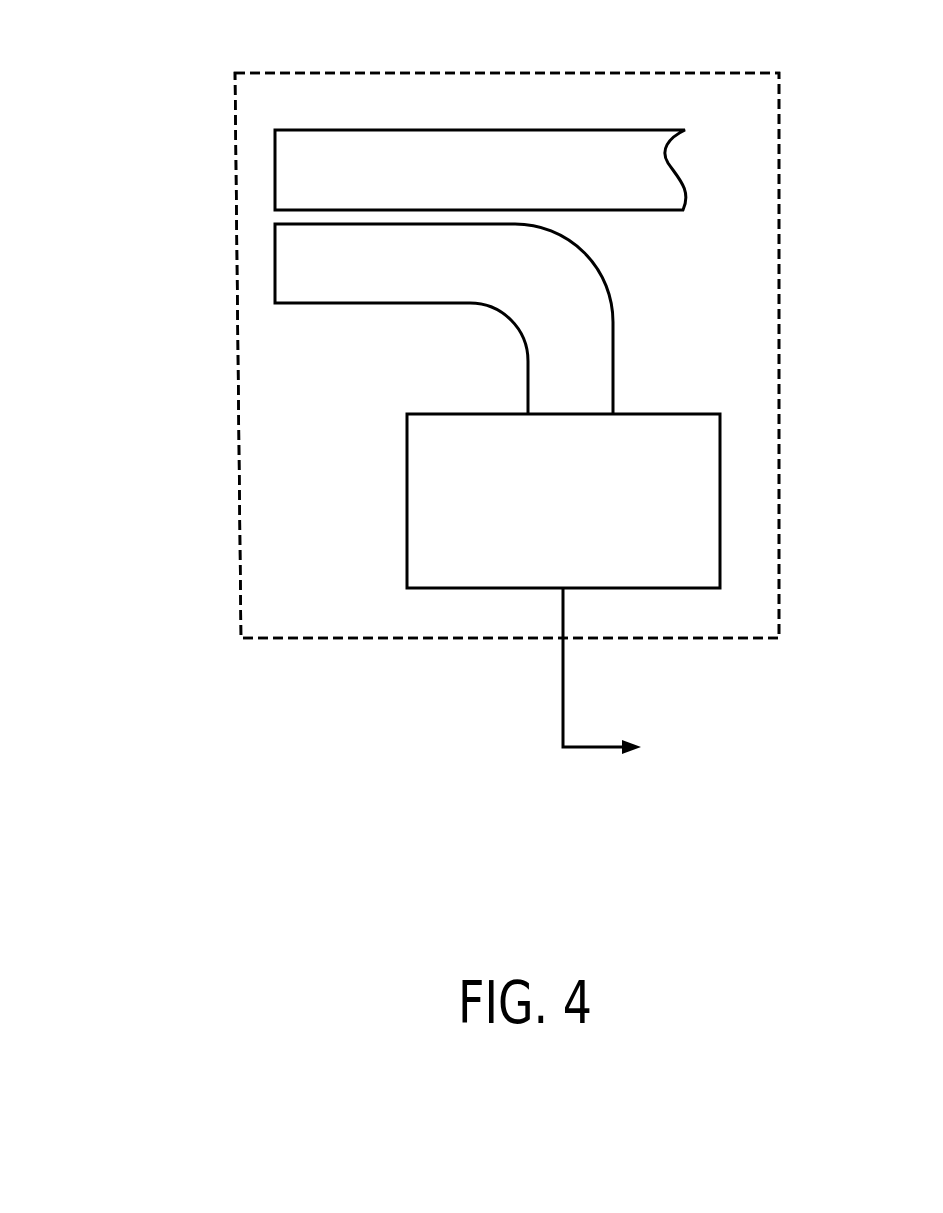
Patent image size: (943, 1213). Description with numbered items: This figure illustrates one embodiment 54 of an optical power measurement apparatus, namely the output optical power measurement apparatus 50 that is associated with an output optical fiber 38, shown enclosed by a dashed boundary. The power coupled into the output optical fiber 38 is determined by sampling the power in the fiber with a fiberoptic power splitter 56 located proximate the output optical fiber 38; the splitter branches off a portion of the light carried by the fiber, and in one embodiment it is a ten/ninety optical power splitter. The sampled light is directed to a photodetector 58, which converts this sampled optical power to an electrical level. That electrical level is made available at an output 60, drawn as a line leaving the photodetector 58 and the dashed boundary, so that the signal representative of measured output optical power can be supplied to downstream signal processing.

The embodiment of the optical power measurement apparatus 54 is at (140, 125).
The output optical power measurement apparatus 50 is at (240, 508).
The output optical fiber 38 is at (620, 128).
The fiberoptic power splitter 56 is at (332, 305).
The photodetector 58 is at (720, 463).
The output 60 is at (563, 700).